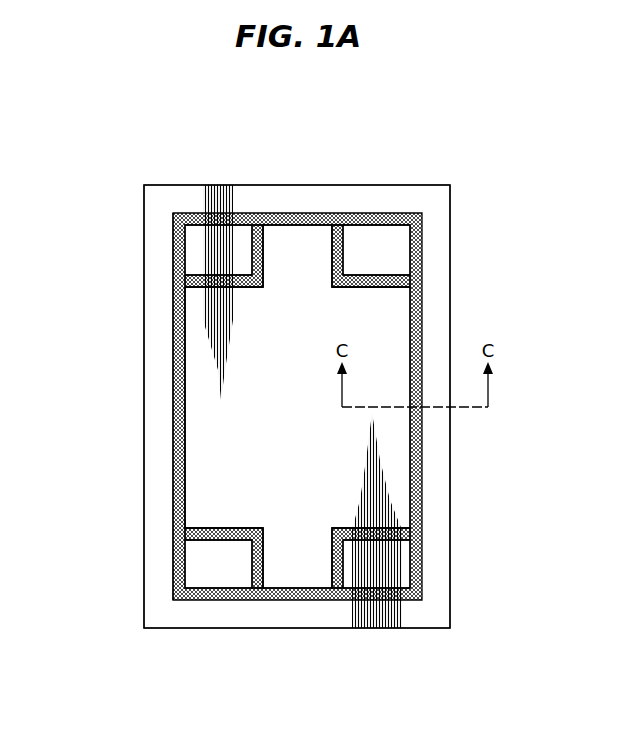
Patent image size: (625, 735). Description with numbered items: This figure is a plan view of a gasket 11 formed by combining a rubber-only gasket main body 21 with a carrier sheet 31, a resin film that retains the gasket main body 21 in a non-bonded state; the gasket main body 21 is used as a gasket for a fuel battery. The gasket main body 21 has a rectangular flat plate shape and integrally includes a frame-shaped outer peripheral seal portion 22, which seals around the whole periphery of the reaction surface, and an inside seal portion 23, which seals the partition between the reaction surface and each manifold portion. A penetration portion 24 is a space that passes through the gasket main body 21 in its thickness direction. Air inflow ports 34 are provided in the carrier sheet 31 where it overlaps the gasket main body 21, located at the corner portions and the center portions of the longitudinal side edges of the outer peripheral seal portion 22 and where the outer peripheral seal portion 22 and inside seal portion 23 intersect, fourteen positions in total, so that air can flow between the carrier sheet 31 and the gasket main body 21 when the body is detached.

The gasket 11 is at (138, 202).
The gasket main body 21 is at (397, 212).
The outer peripheral seal portion 22 is at (178, 378).
The inside seal portion 23 is at (200, 288).
The penetration portion 24 is at (247, 250).
The carrier sheet 31 is at (440, 515).
The air inflow port 34 is at (255, 214).